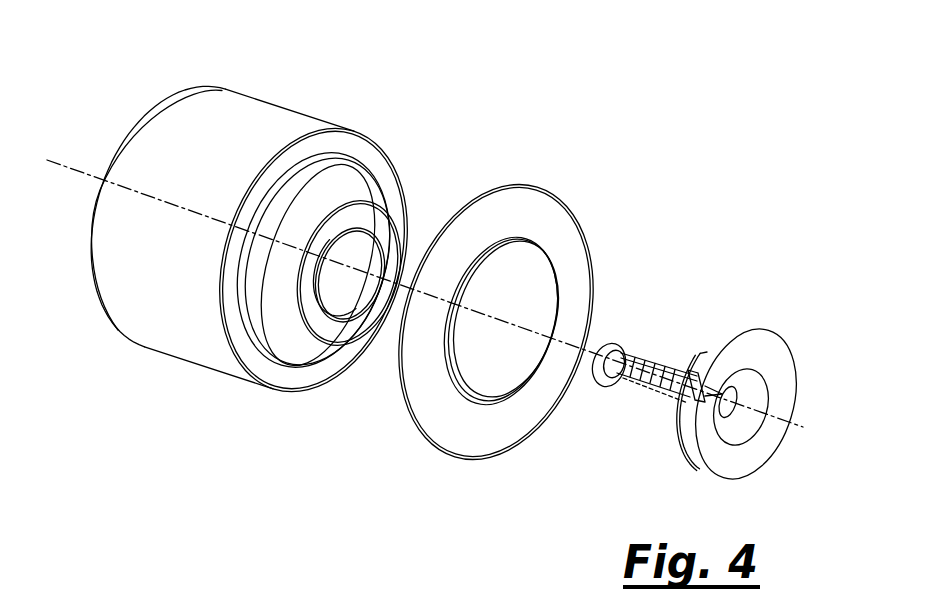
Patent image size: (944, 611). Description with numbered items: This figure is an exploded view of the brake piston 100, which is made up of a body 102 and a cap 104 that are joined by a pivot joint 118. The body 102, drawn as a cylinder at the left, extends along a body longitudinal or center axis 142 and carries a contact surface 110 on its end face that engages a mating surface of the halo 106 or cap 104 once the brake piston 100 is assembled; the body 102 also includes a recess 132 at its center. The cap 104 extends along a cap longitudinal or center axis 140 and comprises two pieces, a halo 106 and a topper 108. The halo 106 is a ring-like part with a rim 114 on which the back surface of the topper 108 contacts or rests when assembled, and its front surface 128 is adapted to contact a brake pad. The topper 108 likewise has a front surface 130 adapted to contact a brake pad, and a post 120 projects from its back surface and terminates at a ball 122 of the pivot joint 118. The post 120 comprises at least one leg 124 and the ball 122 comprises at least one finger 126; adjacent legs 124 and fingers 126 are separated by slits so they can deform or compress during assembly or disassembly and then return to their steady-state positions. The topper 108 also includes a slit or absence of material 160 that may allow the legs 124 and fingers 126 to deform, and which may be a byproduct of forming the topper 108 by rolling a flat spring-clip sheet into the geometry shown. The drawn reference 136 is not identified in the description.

The brake piston 100 is at (195, 42).
The body 102 is at (265, 98).
The cap 104 is at (708, 262).
The halo 106 is at (528, 208).
The topper 108 is at (752, 343).
The contact surface 110 is at (363, 180).
The rim 114 is at (527, 258).
The pivot joint 118 is at (368, 403).
The post 120 is at (655, 410).
The ball 122 is at (598, 390).
The leg 124 is at (677, 388).
The finger 126 is at (592, 355).
The front surface 128 is at (553, 240).
The front surface 130 is at (753, 453).
The recess 132 is at (353, 250).
The seal ring opening 136 is at (482, 368).
The cap longitudinal or center axis 140 is at (90, 177).
The body longitudinal or center axis 142 is at (70, 168).
The slit or absence of material 160 is at (700, 470).